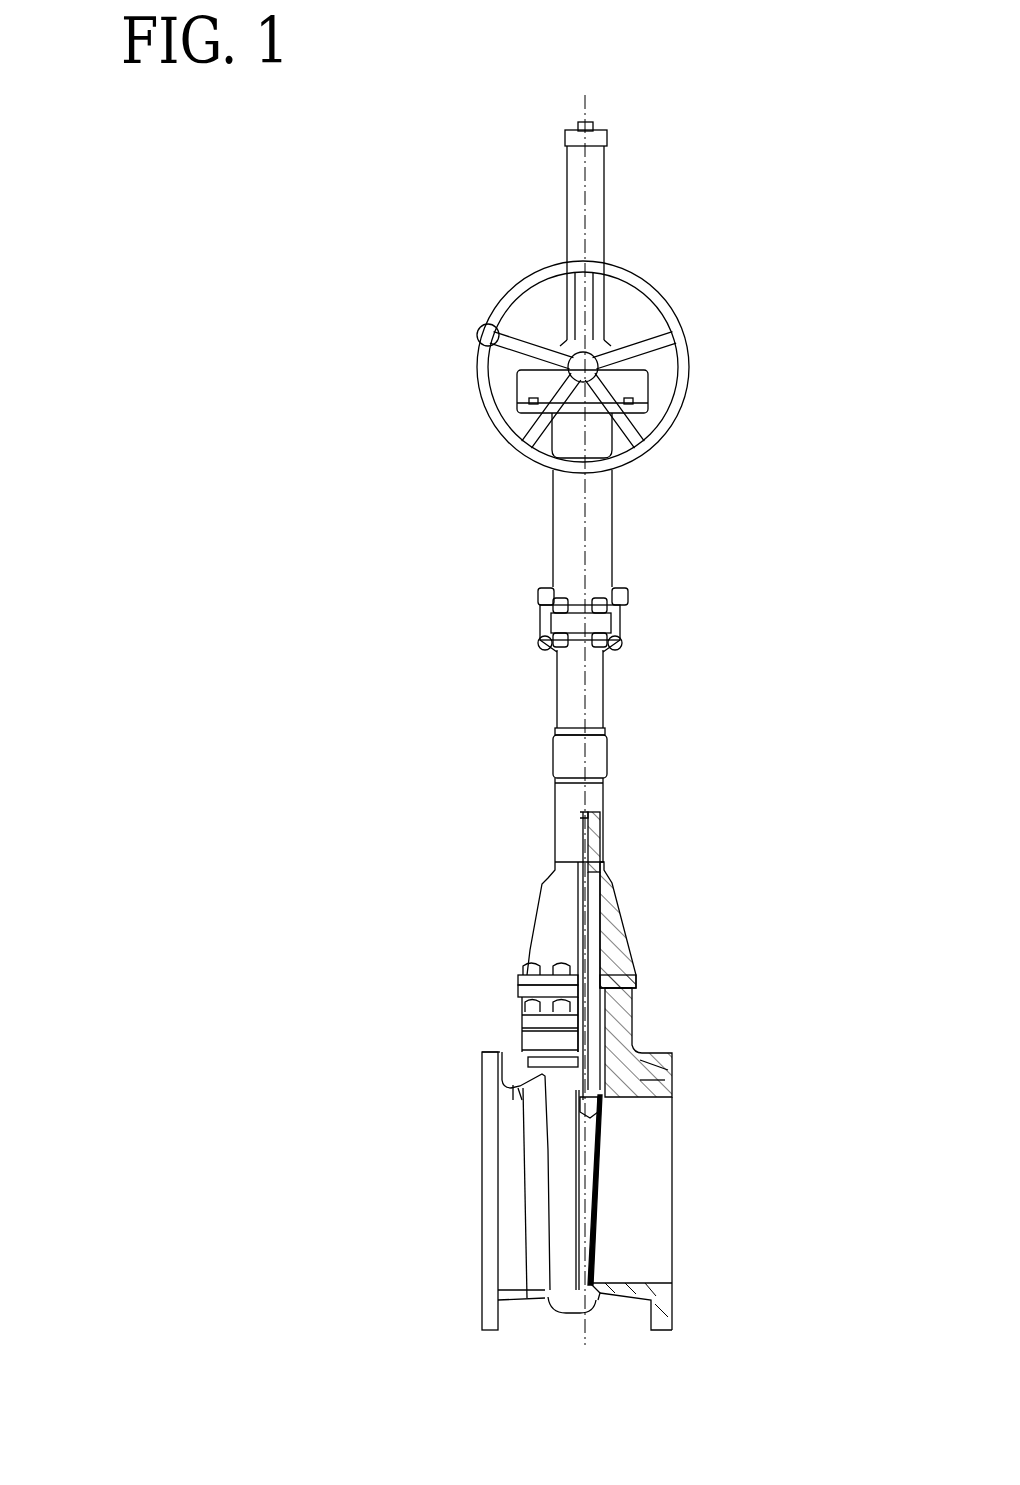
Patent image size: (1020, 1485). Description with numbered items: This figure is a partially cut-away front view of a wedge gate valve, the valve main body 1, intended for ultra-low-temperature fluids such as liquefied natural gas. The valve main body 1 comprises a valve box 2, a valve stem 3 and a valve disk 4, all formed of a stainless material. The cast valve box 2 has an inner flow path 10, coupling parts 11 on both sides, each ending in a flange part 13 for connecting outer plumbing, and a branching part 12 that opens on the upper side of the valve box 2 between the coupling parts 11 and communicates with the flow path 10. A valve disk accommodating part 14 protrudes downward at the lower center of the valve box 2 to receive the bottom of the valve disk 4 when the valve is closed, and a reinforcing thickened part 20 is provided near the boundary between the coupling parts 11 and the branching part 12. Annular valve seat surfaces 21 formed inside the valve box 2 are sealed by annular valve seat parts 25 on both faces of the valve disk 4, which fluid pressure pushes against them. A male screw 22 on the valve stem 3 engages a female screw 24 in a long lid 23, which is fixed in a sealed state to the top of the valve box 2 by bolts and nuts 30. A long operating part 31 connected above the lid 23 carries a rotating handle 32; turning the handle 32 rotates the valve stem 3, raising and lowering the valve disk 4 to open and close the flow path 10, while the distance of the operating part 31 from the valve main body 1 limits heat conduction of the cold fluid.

The valve main body 1 is at (557, 1315).
The valve box 2 is at (665, 1072).
The valve stem 3 is at (585, 902).
The valve disk 4 is at (600, 1127).
The flow path 10 is at (640, 1268).
The coupling part 11 is at (632, 1290).
The branching part 12 is at (630, 1025).
The flange part 13 is at (673, 1053).
The valve disk accommodating part 14 is at (600, 1300).
The reinforcing thickened part 20 is at (538, 1230).
The valve seat surface 21 is at (596, 1200).
The male screw 22 is at (598, 942).
The lid 23 is at (556, 907).
The female screw 24 is at (603, 846).
The valve seat part 25 is at (662, 1080).
The bolts and nuts 30 is at (560, 955).
The operating part 31 is at (598, 518).
The rotating handle 32 is at (476, 393).